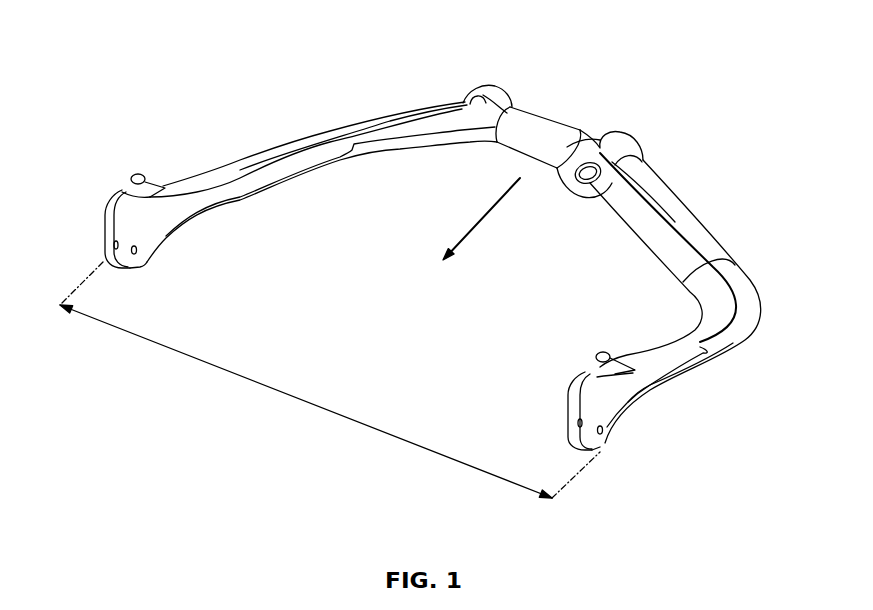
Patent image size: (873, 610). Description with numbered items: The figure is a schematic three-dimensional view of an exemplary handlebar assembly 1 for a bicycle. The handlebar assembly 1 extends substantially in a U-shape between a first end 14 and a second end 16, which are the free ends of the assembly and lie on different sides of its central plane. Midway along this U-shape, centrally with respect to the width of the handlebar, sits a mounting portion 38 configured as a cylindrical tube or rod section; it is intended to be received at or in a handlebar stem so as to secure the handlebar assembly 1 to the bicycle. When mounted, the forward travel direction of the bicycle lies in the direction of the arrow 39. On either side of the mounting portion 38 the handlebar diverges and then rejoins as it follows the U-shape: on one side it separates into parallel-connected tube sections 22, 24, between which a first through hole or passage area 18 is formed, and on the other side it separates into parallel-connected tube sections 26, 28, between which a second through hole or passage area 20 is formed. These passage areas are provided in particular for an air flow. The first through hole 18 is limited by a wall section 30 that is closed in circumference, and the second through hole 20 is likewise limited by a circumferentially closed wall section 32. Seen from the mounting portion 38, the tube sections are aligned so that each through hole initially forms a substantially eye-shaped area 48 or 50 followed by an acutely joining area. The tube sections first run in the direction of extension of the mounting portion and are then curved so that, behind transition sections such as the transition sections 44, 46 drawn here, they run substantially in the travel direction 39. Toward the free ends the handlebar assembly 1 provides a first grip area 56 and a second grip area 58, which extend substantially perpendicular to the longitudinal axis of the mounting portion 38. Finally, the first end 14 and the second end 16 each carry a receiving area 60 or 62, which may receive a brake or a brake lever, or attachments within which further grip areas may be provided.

The handlebar assembly 1 is at (86, 58).
The first end 14 is at (100, 228).
The second end 16 is at (568, 383).
The first through hole or passage area 18 is at (432, 127).
The second through hole or passage area 20 is at (588, 197).
The tube or tube section 22 is at (413, 115).
The tube or tube section 24 is at (362, 150).
The tube or tube section 26 is at (677, 212).
The tube or tube section 28 is at (650, 230).
The wall section 30 is at (440, 147).
The wall section 32 is at (613, 208).
The mounting portion 38 is at (537, 123).
The arrow 39 is at (477, 228).
The transition section 44 is at (747, 293).
The transition section 46 is at (722, 312).
The eye-shaped area 48 is at (460, 110).
The eye-shaped area 50 is at (595, 160).
The first grip area 56 is at (215, 182).
The second grip area 58 is at (703, 355).
The receiving area 60 is at (112, 232).
The receiving area 62 is at (578, 417).